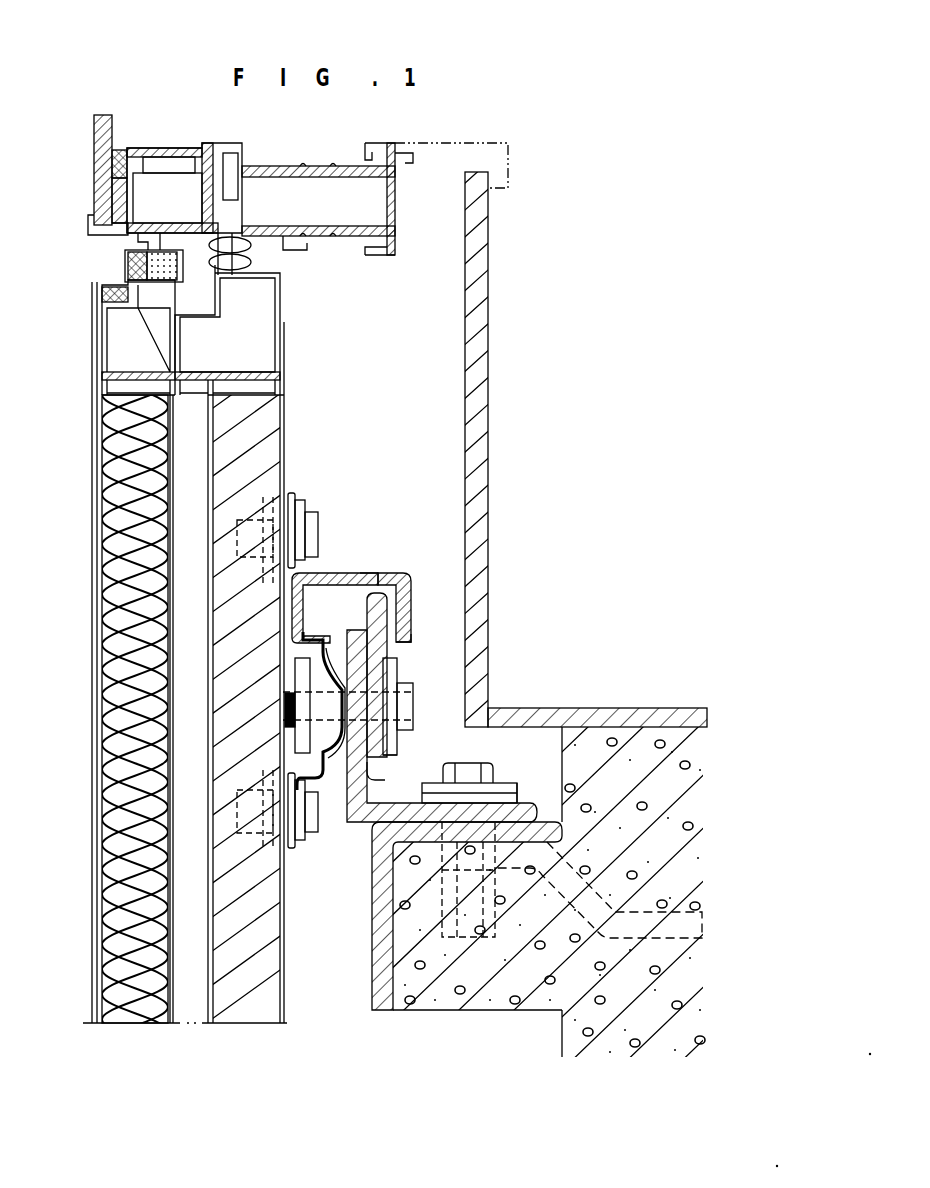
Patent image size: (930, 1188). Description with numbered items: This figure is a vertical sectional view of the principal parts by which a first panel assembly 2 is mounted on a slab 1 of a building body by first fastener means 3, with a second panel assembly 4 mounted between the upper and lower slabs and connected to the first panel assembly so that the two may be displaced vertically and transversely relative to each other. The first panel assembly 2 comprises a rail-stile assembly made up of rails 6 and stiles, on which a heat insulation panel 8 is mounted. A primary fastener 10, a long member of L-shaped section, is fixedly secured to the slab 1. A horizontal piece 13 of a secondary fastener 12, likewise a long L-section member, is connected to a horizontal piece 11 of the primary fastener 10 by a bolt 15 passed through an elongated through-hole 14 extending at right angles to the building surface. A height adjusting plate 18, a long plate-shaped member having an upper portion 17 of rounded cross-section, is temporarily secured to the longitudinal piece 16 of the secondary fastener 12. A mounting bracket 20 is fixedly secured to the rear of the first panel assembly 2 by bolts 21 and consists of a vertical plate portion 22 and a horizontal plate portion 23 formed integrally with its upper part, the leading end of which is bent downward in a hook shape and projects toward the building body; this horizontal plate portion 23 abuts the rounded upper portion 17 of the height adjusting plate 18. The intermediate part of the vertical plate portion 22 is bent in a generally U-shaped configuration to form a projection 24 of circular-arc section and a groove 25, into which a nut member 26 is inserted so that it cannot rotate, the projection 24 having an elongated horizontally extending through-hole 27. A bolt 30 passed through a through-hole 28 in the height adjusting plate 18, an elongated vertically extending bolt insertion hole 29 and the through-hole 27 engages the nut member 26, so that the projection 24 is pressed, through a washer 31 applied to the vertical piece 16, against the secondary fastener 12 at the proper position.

The slab 1 is at (650, 735).
The first panel assembly 2 is at (92, 762).
The first fastener means 3 is at (454, 689).
The second panel assembly 4 is at (95, 185).
The rail 6 is at (100, 336).
The heat insulation panel 8 is at (100, 571).
The primary fastener 10 is at (372, 876).
The horizontal piece 11 is at (430, 848).
The secondary fastener 12 is at (355, 822).
The horizontal piece 13 is at (533, 806).
The elongated through-hole 14 is at (510, 783).
The bolt 15 is at (498, 758).
The longitudinal piece 16 is at (380, 776).
The upper portion 17 is at (405, 586).
The height adjusting plate 18 is at (411, 638).
The mounting bracket 20 is at (300, 575).
The bolt 21 is at (318, 530).
The vertical plate portion 22 is at (292, 495).
The horizontal plate portion 23 is at (376, 573).
The projection 24 is at (322, 656).
The groove 25 is at (292, 660).
The nut member 26 is at (292, 676).
The elongated horizontally extending through-hole 27 is at (285, 712).
The through-hole 28 is at (400, 688).
The bolt insertion hole 29 is at (398, 752).
The bolt 30 is at (413, 718).
The washer 31 is at (343, 662).